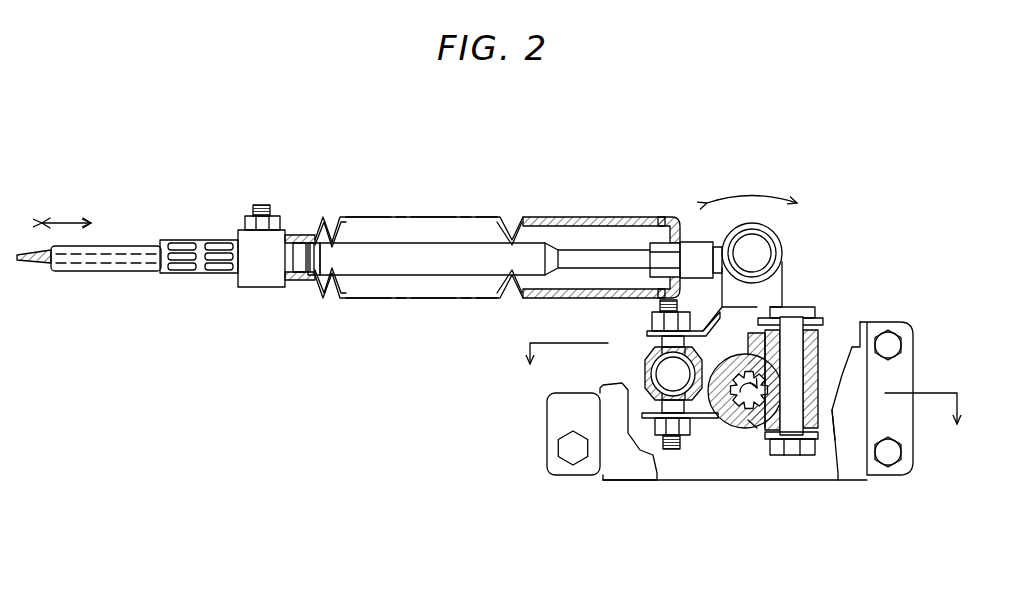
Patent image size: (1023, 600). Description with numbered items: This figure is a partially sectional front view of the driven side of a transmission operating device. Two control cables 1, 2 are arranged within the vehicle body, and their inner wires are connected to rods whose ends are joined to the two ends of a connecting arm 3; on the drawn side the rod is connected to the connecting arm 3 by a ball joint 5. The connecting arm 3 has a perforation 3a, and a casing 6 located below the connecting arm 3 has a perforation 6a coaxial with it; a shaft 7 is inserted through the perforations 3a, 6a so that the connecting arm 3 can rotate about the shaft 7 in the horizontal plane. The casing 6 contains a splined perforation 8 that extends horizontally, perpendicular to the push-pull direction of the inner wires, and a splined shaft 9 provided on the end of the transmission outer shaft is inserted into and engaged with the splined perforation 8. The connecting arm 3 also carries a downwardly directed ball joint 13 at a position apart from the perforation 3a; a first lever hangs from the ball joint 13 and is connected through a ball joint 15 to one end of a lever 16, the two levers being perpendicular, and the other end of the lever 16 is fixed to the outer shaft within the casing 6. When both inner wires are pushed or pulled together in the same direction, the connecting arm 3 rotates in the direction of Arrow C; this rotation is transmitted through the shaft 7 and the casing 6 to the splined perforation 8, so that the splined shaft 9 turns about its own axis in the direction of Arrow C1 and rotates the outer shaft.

The control cable 2 is at (137, 234).
The ball joint 5 is at (756, 254).
The perforation 3a is at (797, 323).
The connecting arm 3 is at (818, 341).
The ball joint 13 is at (665, 375).
The ball joint 15 is at (665, 405).
The lever 16 is at (707, 417).
The control cable 1 is at (744, 400).
The casing 6 is at (850, 328).
The perforation 6a is at (822, 396).
The splined perforation 8 is at (730, 407).
The splined shaft 9 is at (750, 400).
The shaft 7 is at (788, 418).
The Arrow C is at (745, 199).
The Arrow C1 is at (750, 368).